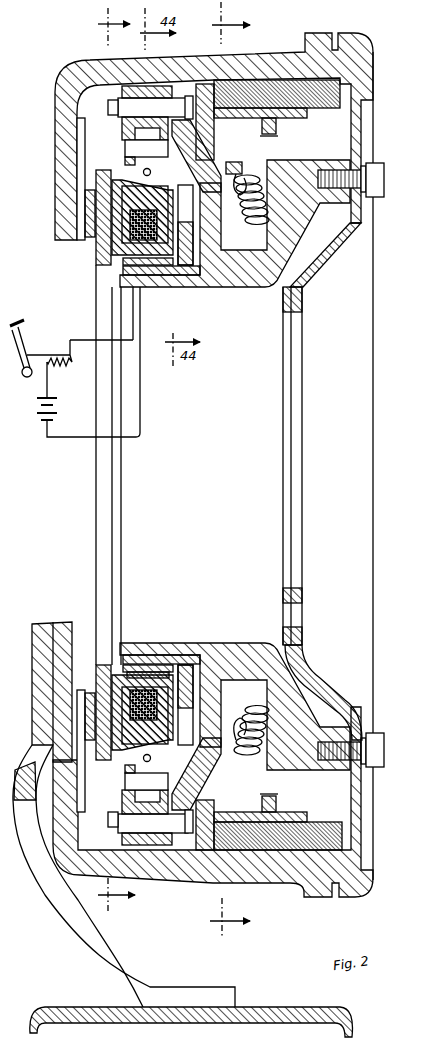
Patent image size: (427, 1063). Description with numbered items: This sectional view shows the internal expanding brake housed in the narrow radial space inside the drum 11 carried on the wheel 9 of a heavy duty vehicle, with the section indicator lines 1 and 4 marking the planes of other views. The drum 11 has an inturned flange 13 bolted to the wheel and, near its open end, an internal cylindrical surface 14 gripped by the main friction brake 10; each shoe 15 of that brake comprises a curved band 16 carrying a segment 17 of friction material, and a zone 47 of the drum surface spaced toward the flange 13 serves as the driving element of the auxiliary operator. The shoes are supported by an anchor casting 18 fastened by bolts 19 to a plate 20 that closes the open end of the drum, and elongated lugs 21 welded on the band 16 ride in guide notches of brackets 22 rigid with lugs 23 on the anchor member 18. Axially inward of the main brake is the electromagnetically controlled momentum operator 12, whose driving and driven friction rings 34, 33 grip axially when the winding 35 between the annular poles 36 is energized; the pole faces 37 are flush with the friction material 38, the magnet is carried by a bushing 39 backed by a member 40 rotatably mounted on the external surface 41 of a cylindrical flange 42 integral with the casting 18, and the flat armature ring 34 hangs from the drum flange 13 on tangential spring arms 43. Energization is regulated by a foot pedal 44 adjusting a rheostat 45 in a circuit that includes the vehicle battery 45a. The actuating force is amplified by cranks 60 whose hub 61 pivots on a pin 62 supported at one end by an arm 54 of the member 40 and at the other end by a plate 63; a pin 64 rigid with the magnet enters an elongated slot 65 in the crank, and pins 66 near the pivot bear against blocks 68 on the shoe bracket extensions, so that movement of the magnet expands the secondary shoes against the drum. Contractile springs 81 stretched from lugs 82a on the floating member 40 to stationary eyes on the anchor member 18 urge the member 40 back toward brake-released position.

The section line 1- 1 is at (230, 473).
The section line 4- 4 is at (109, 461).
The wheel 9 is at (104, 932).
The main friction brake 10 is at (290, 94).
The drum 11 is at (265, 68).
The momentum type friction operator 12 is at (183, 274).
The inturned flange 13 is at (66, 626).
The internal cylindrical surface 14 is at (213, 802).
The semi-circular shoes 15 is at (353, 118).
The curved band 16 is at (271, 465).
The segment of friction material 17 is at (352, 98).
The anchor member casting 18 is at (300, 714).
The bolts 19 is at (384, 180).
The plate 20 is at (323, 676).
The elongated lugs 21 is at (274, 132).
The brackets 22 is at (235, 475).
The lugs 23 is at (290, 785).
The driven friction ring 33 is at (184, 668).
The driving friction ring (armature ring) 34 is at (108, 704).
The winding 35 is at (128, 716).
The annular poles 36 is at (120, 766).
The pole faces 37 is at (102, 680).
The friction material 38 is at (108, 742).
The bushing 39 is at (138, 664).
The auxiliary anchor member 40 is at (216, 656).
The external surface 41 is at (203, 648).
The cylindrical flange 42 is at (160, 650).
The spring arms 43 is at (85, 226).
The foot pedal 44 is at (44, 318).
The rheostat 45 is at (60, 350).
The vehicle battery 45a is at (40, 425).
The zone of internal drum surface 47 is at (104, 90).
The arms 54 is at (210, 457).
The cranks 60 is at (206, 284).
The hub 61 is at (142, 90).
The pin 62 is at (118, 108).
The plate 63 is at (122, 126).
The pin 64 is at (234, 161).
The elongated slot 65 is at (202, 228).
The pins 66 is at (126, 153).
The blocks 68 is at (126, 800).
The contractile springs 81 is at (266, 204).
The lugs 82a is at (246, 459).